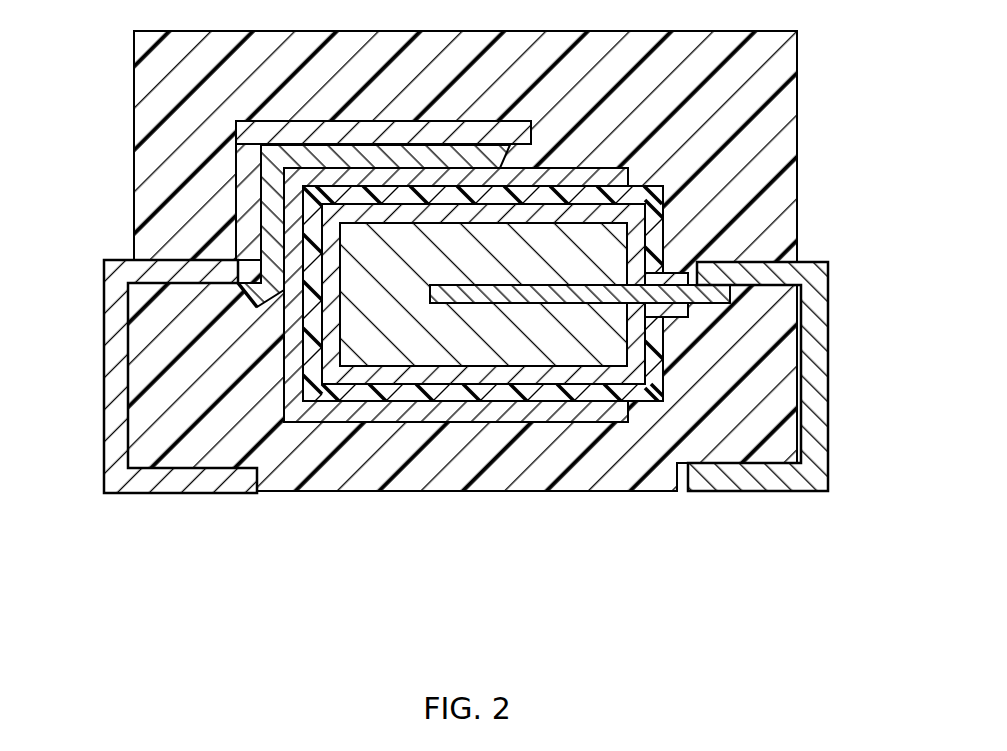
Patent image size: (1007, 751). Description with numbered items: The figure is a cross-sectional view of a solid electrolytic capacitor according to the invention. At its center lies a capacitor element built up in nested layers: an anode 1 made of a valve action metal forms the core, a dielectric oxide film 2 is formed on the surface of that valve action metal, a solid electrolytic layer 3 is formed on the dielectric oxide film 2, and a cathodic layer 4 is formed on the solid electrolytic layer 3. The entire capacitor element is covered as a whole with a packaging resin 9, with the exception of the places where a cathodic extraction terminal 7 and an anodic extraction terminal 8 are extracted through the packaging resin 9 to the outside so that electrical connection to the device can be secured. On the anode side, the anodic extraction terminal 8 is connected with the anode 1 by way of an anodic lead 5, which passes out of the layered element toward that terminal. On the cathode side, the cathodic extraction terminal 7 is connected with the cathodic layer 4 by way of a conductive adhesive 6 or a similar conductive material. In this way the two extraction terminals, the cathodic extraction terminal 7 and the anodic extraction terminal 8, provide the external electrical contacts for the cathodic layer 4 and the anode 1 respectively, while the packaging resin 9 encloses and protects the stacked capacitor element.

The anode 1 is at (480, 382).
The dielectric oxide film 2 is at (637, 362).
The solid electrolytic layer 3 is at (653, 388).
The cathodic layer 4 is at (418, 410).
The anodic lead 5 is at (733, 322).
The conductive adhesive 6 is at (273, 191).
The cathodic extraction terminal 7 is at (120, 360).
The anodic extraction terminal 8 is at (820, 417).
The packaging resin 9 is at (302, 472).